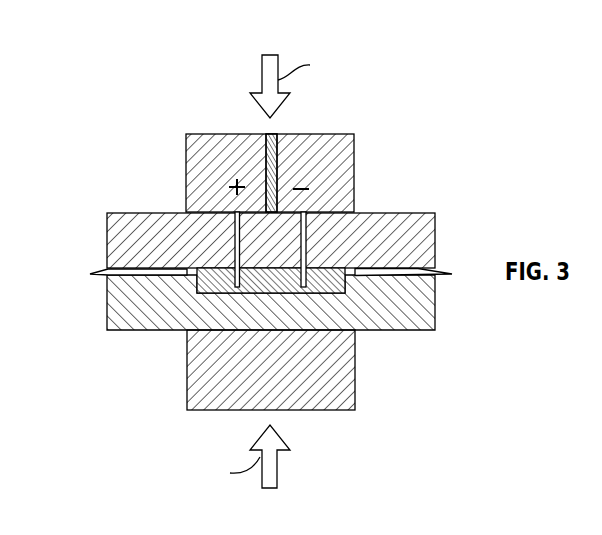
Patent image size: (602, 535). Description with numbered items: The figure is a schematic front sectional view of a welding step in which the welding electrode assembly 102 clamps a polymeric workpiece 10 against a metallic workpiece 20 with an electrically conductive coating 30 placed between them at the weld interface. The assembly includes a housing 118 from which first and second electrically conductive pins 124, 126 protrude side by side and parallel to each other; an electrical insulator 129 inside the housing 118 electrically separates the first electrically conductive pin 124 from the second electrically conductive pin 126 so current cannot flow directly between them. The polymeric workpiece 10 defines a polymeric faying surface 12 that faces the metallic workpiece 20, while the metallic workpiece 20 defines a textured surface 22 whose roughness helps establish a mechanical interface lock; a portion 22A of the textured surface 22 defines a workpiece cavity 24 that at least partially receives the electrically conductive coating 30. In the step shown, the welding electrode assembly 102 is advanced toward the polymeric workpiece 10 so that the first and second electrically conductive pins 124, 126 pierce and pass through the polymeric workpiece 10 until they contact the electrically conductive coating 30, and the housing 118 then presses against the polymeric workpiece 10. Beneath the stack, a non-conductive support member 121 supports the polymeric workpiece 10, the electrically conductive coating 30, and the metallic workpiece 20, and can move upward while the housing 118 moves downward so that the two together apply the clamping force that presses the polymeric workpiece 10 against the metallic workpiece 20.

The welding electrode assembly 102 is at (367, 107).
The housing 118 is at (343, 180).
The electrical insulator 129 is at (263, 167).
The first electrically conductive pin 124 is at (235, 240).
The second electrically conductive pin 126 is at (306, 239).
The polymeric workpiece 10 is at (422, 240).
The polymeric faying surface 12 is at (408, 278).
The metallic workpiece 20 is at (118, 308).
The textured surface 22 is at (132, 270).
The portion of the textured surface 22A is at (348, 279).
The workpiece cavity 24 is at (238, 287).
The electrically conductive coating 30 is at (205, 288).
The support member 121 is at (347, 380).